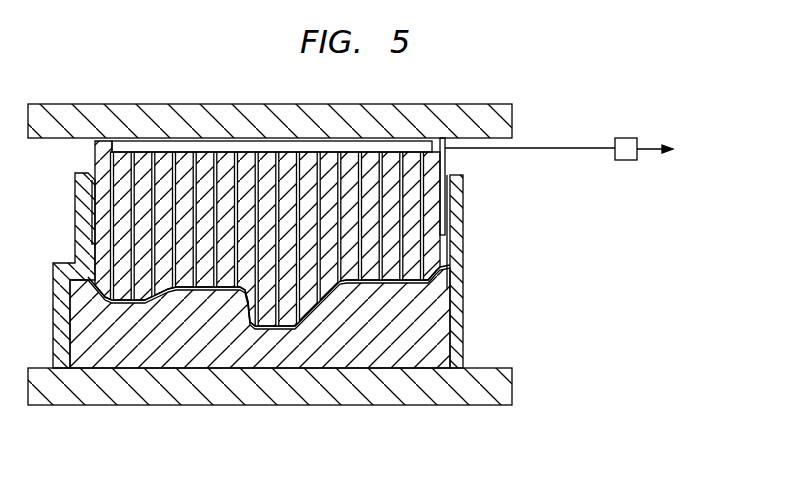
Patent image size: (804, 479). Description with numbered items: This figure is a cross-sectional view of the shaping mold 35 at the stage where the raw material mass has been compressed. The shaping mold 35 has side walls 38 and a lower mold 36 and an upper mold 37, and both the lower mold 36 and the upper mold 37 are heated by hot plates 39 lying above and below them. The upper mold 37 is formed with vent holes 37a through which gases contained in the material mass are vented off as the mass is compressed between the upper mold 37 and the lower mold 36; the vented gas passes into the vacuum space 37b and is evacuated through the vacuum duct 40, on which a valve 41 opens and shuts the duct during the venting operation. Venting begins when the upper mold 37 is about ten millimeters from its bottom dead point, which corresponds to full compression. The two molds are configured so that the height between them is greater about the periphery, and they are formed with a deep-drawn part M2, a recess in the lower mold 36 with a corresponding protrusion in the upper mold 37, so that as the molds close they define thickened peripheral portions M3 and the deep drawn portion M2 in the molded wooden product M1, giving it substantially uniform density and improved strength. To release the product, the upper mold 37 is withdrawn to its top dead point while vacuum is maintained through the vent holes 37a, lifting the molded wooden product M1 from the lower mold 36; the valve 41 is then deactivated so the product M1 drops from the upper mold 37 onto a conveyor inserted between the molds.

The shaping mold 35 is at (317, 219).
The lower mold 36 is at (432, 326).
The upper mold 37 is at (315, 203).
The vent holes 37a is at (380, 170).
The vacuum space 37b is at (157, 144).
The side walls 38 is at (453, 233).
The hot plates 39 is at (512, 120).
The vacuum duct 40 is at (591, 147).
The valve 41 is at (627, 138).
The molded wooden product M1 is at (368, 284).
The deep-drawn part M2 is at (248, 316).
The thickened peripheral portions M3 is at (98, 304).